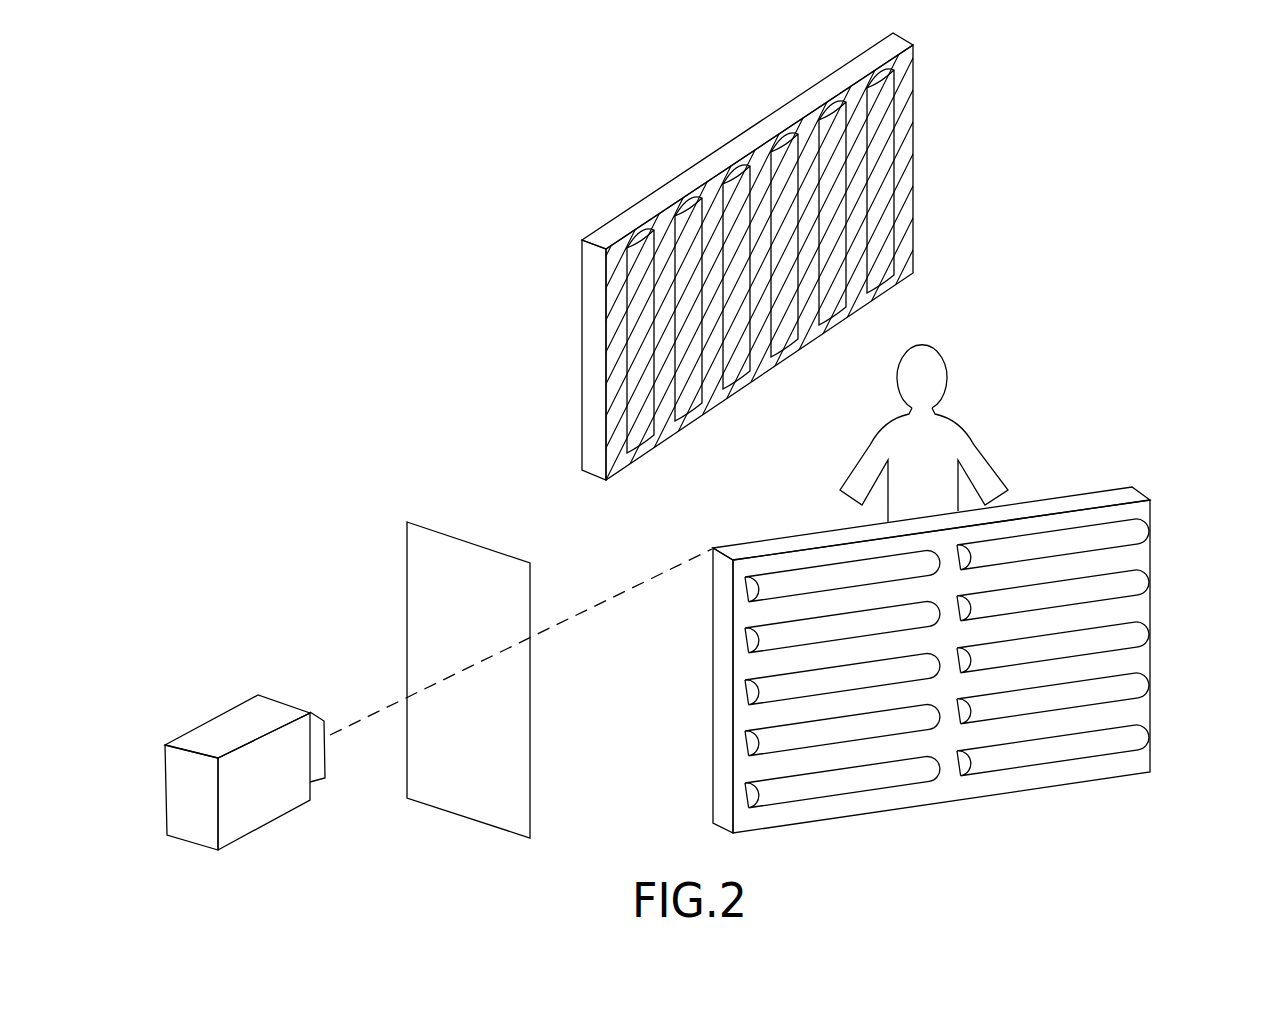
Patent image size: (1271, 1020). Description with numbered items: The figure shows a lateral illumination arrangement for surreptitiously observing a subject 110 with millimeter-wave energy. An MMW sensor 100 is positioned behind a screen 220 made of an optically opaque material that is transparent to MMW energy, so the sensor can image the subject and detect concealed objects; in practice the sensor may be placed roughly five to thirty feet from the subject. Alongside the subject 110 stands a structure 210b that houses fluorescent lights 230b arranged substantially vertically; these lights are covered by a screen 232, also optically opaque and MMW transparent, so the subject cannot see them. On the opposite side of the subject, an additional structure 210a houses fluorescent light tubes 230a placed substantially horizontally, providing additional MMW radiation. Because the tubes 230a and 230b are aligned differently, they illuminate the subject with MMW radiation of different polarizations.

The MMW sensor 100 is at (243, 713).
The subject 110 is at (940, 372).
The additional structure 210a is at (985, 660).
The structure 210b is at (755, 256).
The screen 220 is at (432, 530).
The fluorescent light tubes 230a is at (1107, 747).
The fluorescent light tubes 230b is at (887, 262).
The screen 232 is at (615, 322).